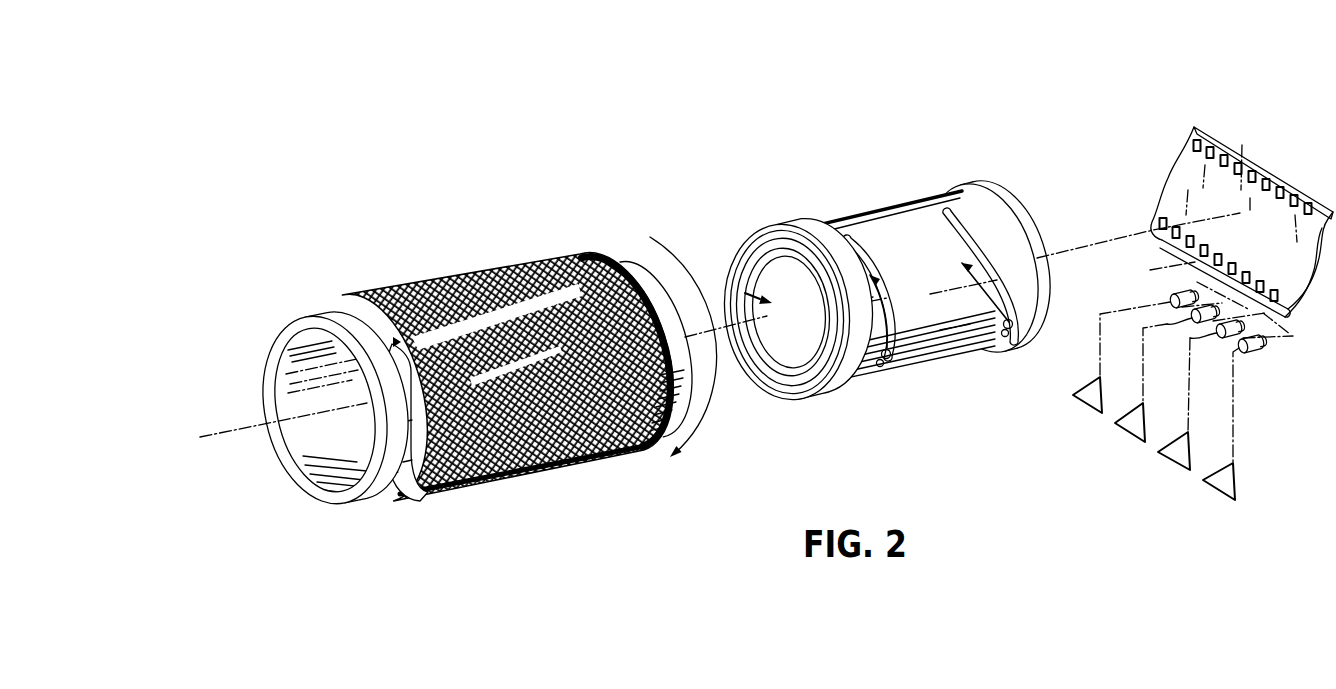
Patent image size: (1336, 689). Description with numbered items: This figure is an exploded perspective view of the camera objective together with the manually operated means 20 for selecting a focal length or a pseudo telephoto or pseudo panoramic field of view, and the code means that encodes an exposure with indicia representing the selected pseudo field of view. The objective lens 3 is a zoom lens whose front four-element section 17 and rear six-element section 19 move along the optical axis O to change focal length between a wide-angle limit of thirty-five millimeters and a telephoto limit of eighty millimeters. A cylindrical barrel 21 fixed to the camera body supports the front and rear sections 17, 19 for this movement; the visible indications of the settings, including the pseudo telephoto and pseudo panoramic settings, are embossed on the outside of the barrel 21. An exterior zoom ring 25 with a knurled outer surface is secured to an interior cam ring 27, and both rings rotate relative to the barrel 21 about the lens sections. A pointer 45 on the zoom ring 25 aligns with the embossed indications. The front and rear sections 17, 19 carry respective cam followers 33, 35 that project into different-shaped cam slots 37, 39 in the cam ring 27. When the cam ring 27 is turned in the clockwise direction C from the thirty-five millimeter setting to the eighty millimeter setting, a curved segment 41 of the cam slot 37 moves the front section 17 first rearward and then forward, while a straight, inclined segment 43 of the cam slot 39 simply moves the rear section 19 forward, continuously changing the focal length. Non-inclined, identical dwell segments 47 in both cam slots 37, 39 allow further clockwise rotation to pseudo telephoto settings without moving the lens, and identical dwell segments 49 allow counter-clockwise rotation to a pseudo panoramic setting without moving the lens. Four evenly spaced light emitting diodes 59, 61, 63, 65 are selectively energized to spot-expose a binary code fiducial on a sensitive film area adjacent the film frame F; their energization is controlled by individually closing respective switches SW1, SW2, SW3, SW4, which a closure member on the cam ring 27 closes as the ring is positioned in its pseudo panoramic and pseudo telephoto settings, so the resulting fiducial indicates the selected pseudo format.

The manually operated means 20 is at (458, 314).
The objective lens 3 is at (869, 277).
The cylindrical barrel 21 is at (645, 283).
The zoom ring 25 is at (517, 478).
The pointer 45 is at (406, 419).
The front four-element section 17 is at (757, 398).
The rear six-element section 19 is at (1037, 211).
The cam ring 27 is at (960, 367).
The dwell segments 47 is at (960, 238).
The dwell segments 49 is at (884, 370).
The cam slot 37 is at (877, 276).
The cam slot 39 is at (968, 266).
The curved segment 41 is at (890, 312).
The straight, inclined segment 43 is at (993, 303).
The cam follower 33 is at (887, 350).
The cam follower 35 is at (1002, 321).
The light emitting diode 59 is at (1172, 301).
The light emitting diode 61 is at (1182, 353).
The light emitting diode 63 is at (1187, 338).
The light emitting diode 65 is at (1242, 352).
The switch SW1 is at (1074, 397).
The switch SW2 is at (1115, 424).
The switch SW3 is at (1158, 452).
The switch SW4 is at (1203, 481).
The film frame F is at (1222, 143).
The optical axis O is at (1090, 247).
The clockwise direction C is at (676, 456).